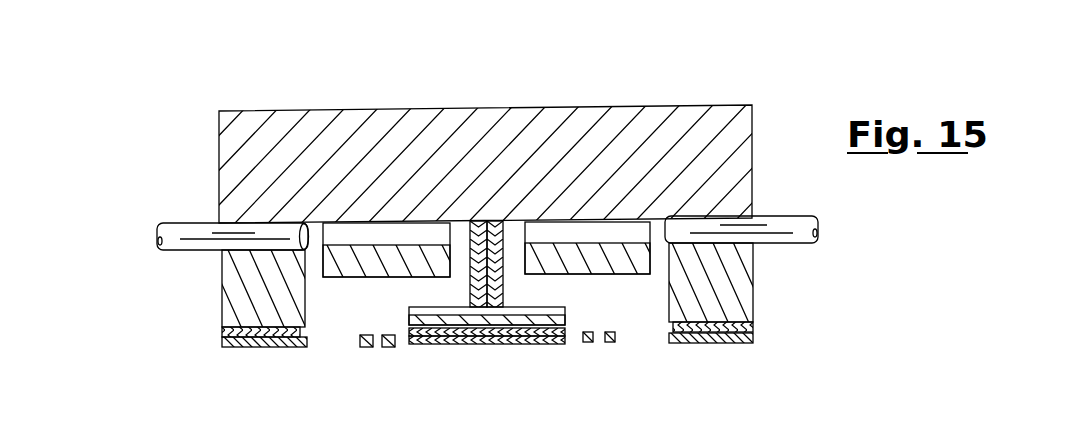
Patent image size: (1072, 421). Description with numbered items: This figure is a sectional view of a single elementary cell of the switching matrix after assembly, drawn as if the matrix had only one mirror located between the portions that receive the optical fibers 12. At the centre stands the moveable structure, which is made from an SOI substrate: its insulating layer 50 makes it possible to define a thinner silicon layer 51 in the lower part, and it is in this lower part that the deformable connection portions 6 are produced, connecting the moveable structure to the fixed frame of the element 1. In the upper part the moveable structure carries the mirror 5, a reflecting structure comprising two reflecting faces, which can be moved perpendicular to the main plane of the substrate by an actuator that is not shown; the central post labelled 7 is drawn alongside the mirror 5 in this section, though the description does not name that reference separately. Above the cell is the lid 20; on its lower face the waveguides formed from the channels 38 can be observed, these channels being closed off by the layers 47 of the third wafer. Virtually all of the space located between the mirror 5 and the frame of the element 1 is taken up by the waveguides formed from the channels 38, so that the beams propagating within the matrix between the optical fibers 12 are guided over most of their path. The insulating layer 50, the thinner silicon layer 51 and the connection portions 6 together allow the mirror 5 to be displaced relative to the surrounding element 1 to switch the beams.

The lid 20 is at (658, 135).
The optical fibers 12 is at (188, 233).
The element 1 is at (732, 306).
The channels 38 is at (378, 233).
The layers 47 is at (340, 263).
The pin half 7 is at (467, 228).
The mirror 5 is at (486, 228).
The insulating layer 50 is at (505, 344).
The silicon layer 51 is at (435, 345).
The connection portions 6 is at (390, 348).